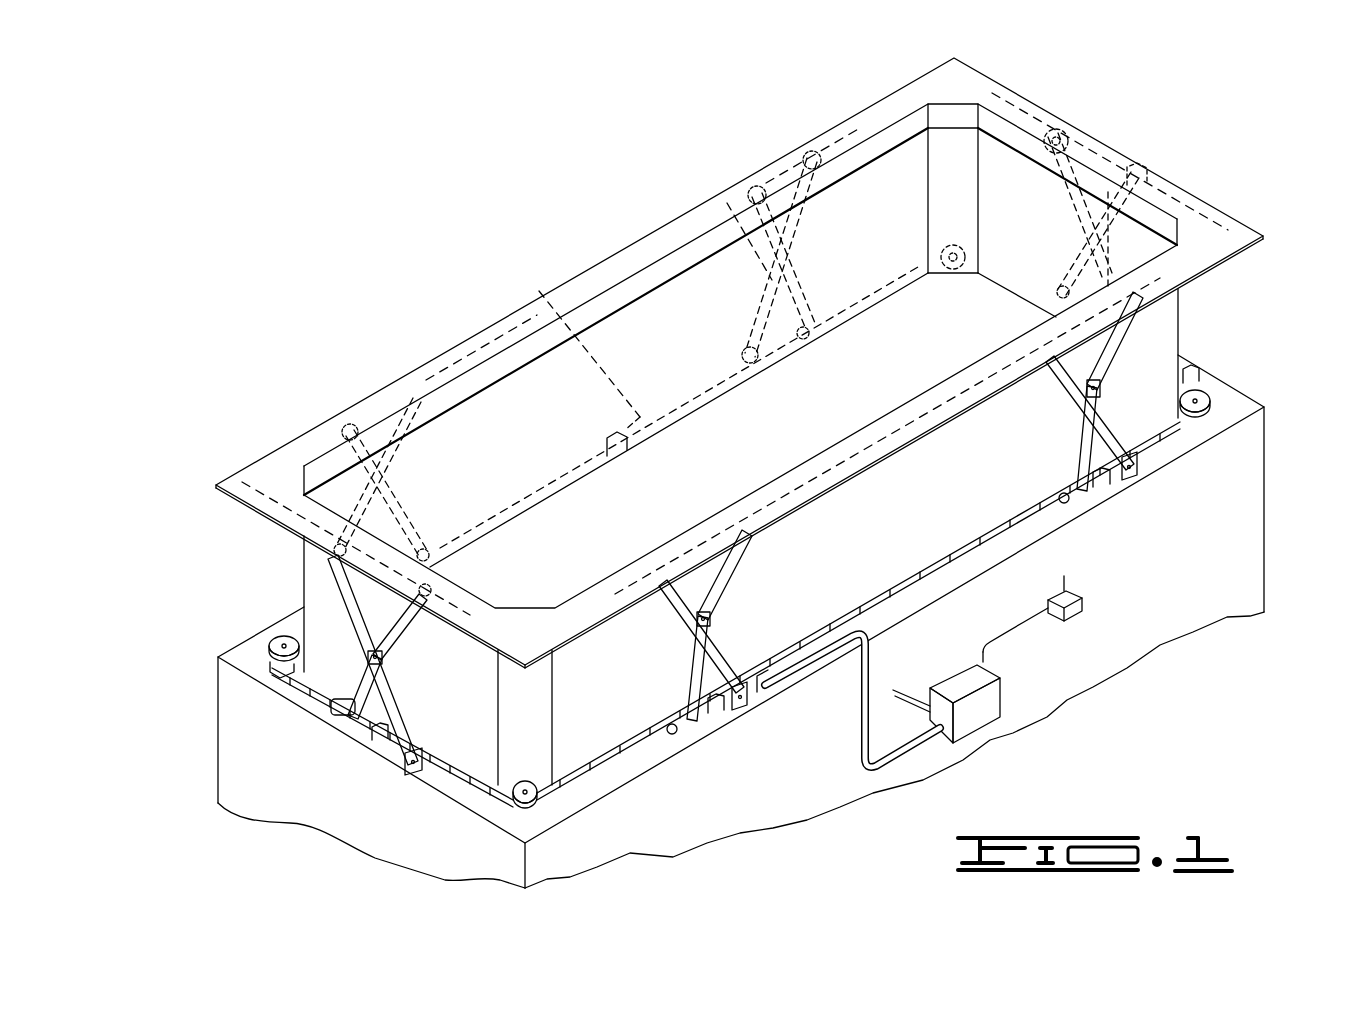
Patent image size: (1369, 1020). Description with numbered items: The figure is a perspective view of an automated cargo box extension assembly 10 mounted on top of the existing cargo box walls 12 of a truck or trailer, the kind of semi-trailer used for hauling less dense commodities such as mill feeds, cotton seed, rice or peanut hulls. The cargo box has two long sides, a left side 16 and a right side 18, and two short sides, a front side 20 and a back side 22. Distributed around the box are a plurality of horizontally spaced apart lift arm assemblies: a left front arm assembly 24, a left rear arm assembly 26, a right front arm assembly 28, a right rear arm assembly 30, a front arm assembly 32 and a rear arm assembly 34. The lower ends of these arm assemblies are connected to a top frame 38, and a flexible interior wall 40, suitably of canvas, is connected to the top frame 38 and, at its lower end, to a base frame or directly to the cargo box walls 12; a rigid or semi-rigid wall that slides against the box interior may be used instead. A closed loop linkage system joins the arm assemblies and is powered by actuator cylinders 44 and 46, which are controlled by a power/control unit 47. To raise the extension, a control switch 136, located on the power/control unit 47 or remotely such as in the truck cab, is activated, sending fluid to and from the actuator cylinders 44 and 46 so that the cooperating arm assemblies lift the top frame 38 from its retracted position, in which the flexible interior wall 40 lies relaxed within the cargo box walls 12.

The automated cargo box extension assembly 10 is at (505, 173).
The top frame 38 is at (993, 93).
The left front arm assembly 24 is at (721, 193).
The actuator cylinder 44 is at (538, 305).
The left rear arm assembly 26 is at (366, 393).
The flexible interior wall 40 is at (658, 313).
The front arm assembly 32 is at (1098, 140).
The right front arm assembly 28 is at (1125, 346).
The right rear arm assembly 30 is at (717, 663).
The rear arm assembly 34 is at (274, 692).
The left side 16 is at (243, 637).
The front side 20 is at (1227, 376).
The right side 18 is at (1248, 557).
The back side 22 is at (279, 808).
The cargo box walls 12 is at (232, 750).
The control switch 136 is at (1082, 607).
The power/control unit 47 is at (981, 714).
The actuator cylinder 46 is at (820, 653).